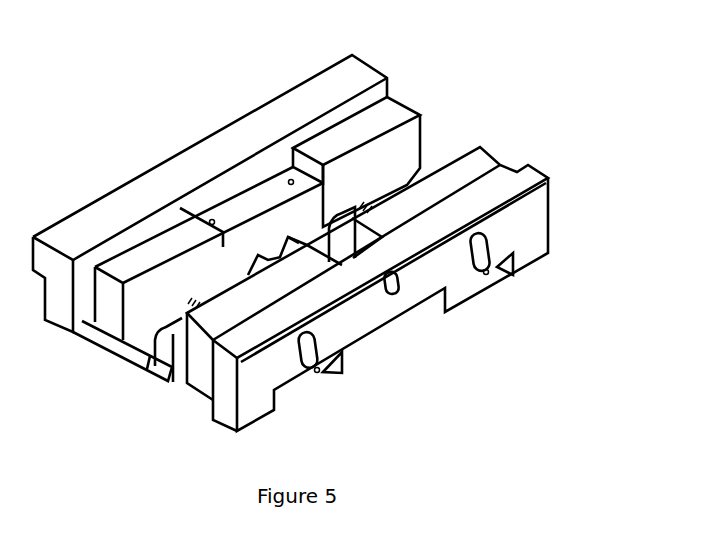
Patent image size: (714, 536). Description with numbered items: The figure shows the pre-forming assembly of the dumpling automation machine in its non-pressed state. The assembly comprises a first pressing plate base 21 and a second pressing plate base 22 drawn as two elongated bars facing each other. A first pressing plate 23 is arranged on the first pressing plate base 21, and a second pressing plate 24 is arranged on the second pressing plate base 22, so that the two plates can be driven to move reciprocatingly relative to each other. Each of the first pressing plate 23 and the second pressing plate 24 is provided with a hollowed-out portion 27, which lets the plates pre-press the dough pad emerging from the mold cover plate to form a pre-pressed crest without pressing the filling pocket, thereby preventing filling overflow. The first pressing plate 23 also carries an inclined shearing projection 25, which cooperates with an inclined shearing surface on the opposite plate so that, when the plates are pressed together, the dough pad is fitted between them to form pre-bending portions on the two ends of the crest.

The first pressing plate base 21 is at (237, 137).
The second pressing plate base 22 is at (534, 208).
The first pressing plate 23 is at (388, 113).
The second pressing plate 24 is at (500, 168).
The inclined shearing projection 25 is at (122, 347).
The hollowed-out portion 27 is at (170, 335).